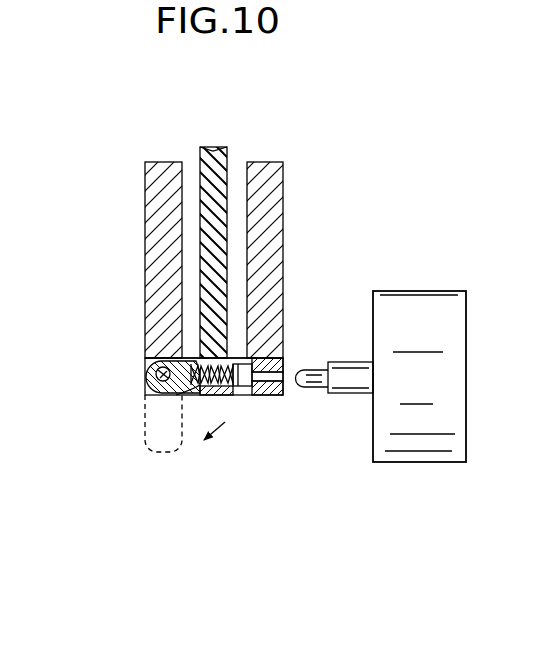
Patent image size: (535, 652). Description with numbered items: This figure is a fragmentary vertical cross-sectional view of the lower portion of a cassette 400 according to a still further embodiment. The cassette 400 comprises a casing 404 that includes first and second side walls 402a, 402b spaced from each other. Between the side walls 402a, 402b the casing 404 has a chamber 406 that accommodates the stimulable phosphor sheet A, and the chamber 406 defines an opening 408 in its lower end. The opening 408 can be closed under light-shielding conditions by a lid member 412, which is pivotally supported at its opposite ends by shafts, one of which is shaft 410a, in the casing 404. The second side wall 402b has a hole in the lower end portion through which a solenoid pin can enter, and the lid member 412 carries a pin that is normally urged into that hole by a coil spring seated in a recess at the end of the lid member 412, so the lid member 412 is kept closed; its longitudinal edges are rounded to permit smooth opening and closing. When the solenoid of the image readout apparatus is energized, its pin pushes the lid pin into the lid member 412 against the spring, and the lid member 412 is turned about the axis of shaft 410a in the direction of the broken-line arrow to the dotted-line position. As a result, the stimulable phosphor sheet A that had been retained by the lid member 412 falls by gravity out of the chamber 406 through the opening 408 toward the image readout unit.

The cassette 400 is at (289, 160).
The first side wall 402a is at (160, 192).
The second side wall 402b is at (272, 202).
The casing 404 is at (143, 233).
The chamber 406 is at (238, 238).
The opening 408 is at (193, 350).
The shaft 410a is at (146, 367).
The lid member 412 is at (150, 382).
The stimulable phosphor sheet A is at (214, 163).